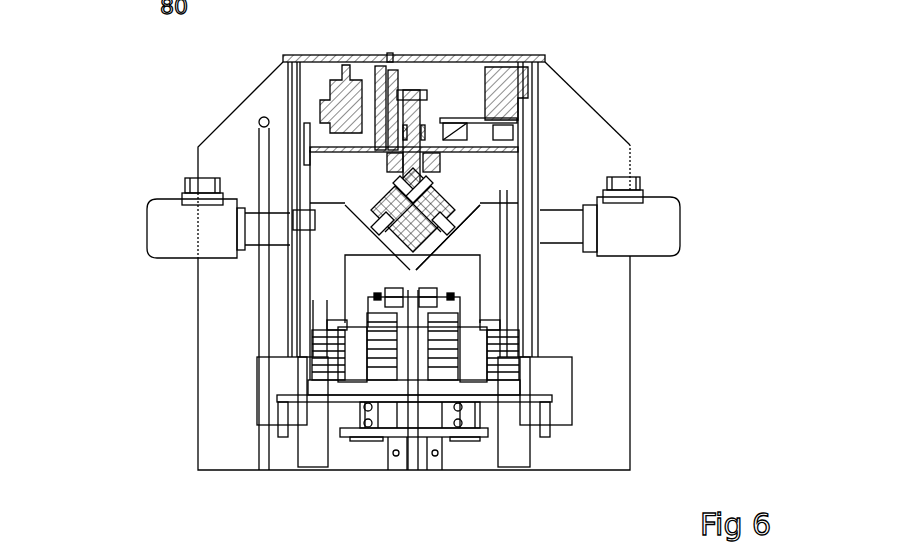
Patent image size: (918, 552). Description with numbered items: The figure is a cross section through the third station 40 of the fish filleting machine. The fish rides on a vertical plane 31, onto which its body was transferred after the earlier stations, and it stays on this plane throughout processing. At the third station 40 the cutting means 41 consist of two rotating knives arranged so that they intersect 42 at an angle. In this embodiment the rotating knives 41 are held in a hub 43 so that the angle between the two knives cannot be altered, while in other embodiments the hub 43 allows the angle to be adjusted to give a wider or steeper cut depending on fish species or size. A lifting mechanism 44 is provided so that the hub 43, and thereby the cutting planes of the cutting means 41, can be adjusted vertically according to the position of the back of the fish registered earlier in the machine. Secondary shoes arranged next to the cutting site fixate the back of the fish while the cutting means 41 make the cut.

The third station 40 is at (162, 128).
The vertical plane 31 is at (365, 382).
The cutting means 41 is at (467, 223).
The intersection 42 is at (417, 273).
The hub 43 is at (450, 193).
The lifting mechanism 44 is at (420, 87).